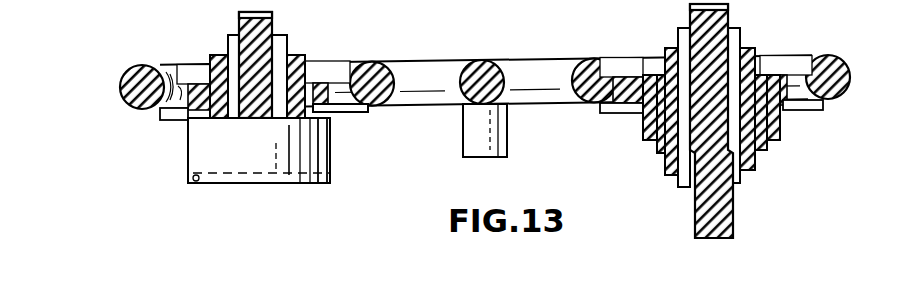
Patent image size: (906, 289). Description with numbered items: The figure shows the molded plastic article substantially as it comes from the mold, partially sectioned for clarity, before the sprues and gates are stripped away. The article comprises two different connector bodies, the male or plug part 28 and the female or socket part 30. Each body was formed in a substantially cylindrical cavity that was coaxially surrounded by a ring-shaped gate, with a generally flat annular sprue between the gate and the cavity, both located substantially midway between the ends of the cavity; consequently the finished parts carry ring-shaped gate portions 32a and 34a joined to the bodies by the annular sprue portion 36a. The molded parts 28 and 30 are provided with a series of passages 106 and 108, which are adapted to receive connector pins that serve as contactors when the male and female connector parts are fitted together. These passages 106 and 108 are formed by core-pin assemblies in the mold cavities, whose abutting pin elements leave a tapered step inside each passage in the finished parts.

The male part 28 is at (228, 176).
The female part 30 is at (752, 188).
The gate portion 32a is at (121, 82).
The gate portion 34a is at (821, 58).
The sprue portion 36a is at (177, 83).
The passages 106 is at (231, 56).
The passages 108 is at (709, 121).